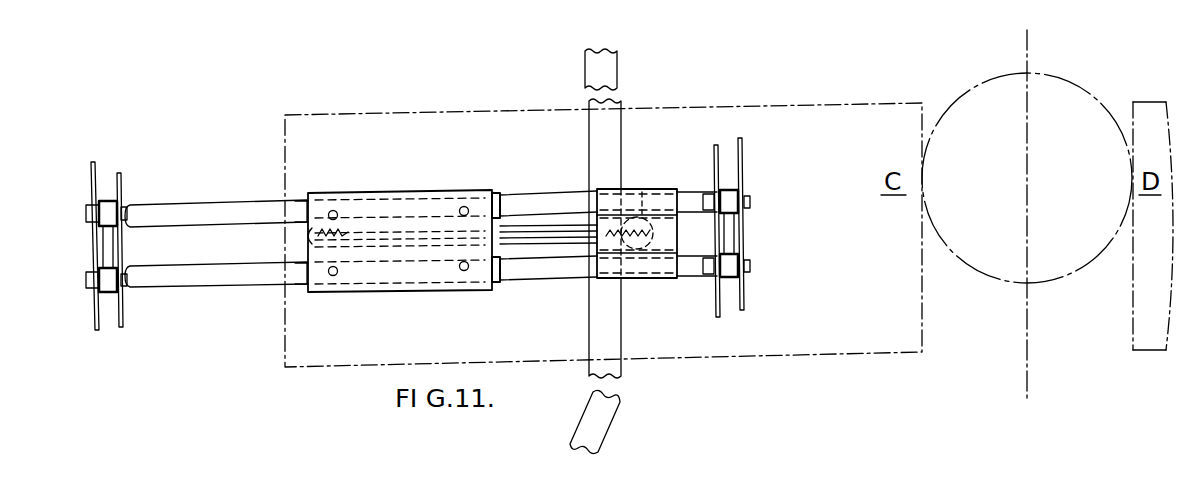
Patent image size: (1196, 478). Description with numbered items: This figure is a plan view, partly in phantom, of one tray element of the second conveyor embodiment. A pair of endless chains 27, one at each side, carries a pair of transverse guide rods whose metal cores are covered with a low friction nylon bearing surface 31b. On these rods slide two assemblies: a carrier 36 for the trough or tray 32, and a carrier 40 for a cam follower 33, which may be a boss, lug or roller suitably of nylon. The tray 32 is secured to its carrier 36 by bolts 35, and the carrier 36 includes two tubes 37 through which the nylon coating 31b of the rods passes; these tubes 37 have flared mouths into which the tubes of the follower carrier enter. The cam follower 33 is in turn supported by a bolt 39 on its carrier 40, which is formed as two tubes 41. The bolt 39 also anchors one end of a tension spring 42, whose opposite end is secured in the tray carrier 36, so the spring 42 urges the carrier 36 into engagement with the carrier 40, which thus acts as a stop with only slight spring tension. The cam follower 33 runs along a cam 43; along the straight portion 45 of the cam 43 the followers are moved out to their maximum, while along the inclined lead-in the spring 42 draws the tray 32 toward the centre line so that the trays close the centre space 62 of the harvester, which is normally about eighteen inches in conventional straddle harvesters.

The endless chains 27 is at (103, 190).
The low friction bearing surface 31b is at (163, 210).
The tray 32 is at (483, 132).
The cam follower 33 is at (642, 192).
The bolts 35 is at (335, 211).
The carrier 36 is at (310, 293).
The tubes 37 is at (499, 206).
The bolt 39 is at (648, 250).
The carrier 40 is at (666, 184).
The tubes 41 is at (665, 259).
The tension spring 42 is at (418, 240).
The cam 43 is at (597, 433).
The straight portion 45 is at (589, 148).
The centre space 62 is at (1067, 392).